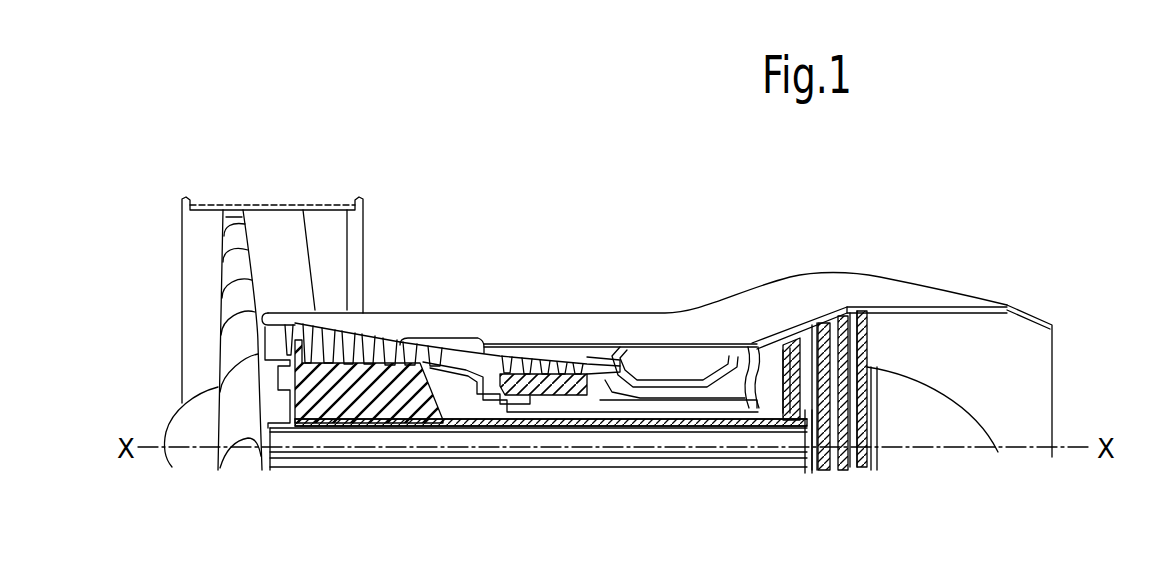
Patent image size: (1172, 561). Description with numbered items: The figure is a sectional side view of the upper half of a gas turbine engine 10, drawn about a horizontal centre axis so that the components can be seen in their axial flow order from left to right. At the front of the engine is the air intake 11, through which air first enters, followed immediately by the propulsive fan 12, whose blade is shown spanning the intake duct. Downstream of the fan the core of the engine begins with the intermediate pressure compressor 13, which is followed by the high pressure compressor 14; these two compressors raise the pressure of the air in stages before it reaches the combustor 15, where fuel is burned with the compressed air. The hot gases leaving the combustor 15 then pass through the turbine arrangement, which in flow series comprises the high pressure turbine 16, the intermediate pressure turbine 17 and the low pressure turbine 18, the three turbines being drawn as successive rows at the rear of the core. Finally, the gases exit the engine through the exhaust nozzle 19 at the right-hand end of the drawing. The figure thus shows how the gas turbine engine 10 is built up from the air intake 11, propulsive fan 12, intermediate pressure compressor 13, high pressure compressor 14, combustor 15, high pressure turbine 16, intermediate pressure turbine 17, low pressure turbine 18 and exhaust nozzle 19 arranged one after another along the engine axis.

The gas turbine engine 10 is at (537, 226).
The air intake 11 is at (150, 313).
The propulsive fan 12 is at (241, 245).
The intermediate pressure compressor 13 is at (370, 378).
The high pressure compressor 14 is at (543, 352).
The combustor 15 is at (681, 328).
The high pressure turbine 16 is at (753, 340).
The intermediate pressure turbine 17 is at (790, 340).
The low pressure turbine 18 is at (863, 340).
The exhaust nozzle 19 is at (1033, 403).